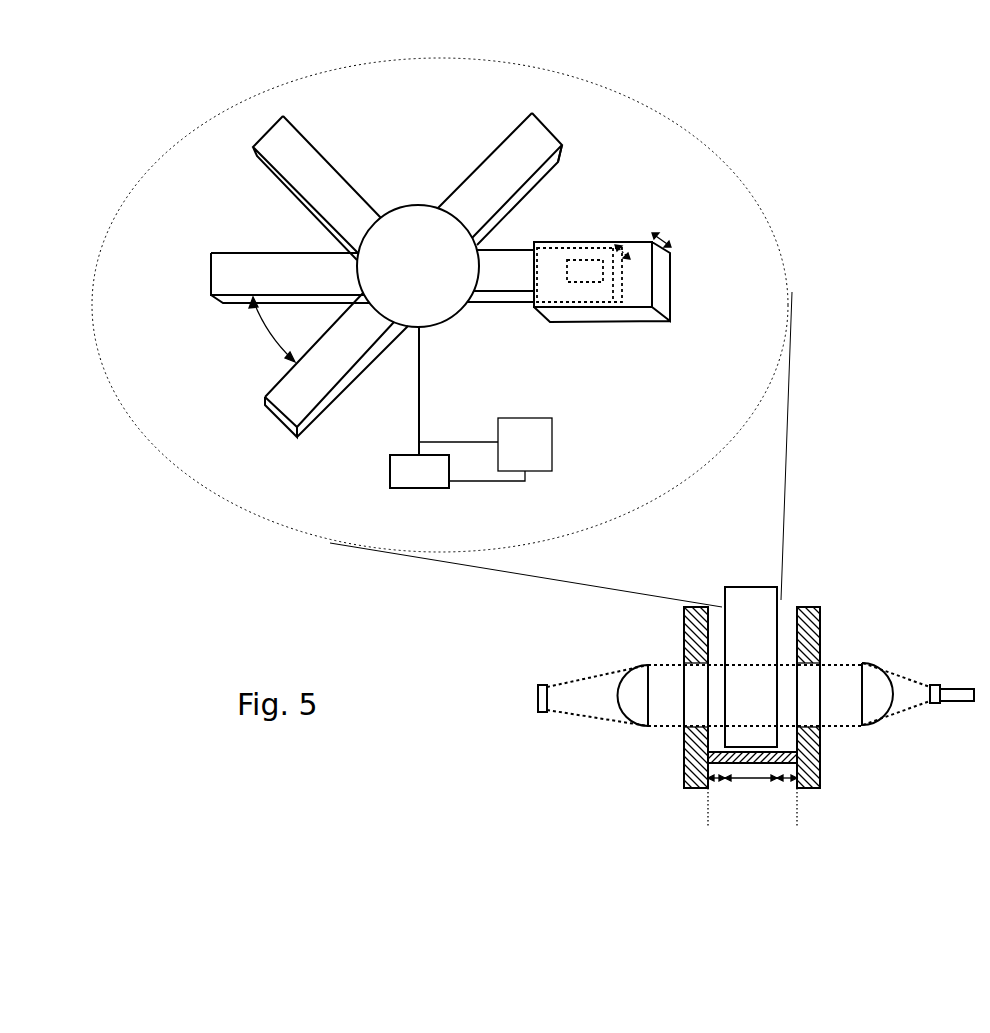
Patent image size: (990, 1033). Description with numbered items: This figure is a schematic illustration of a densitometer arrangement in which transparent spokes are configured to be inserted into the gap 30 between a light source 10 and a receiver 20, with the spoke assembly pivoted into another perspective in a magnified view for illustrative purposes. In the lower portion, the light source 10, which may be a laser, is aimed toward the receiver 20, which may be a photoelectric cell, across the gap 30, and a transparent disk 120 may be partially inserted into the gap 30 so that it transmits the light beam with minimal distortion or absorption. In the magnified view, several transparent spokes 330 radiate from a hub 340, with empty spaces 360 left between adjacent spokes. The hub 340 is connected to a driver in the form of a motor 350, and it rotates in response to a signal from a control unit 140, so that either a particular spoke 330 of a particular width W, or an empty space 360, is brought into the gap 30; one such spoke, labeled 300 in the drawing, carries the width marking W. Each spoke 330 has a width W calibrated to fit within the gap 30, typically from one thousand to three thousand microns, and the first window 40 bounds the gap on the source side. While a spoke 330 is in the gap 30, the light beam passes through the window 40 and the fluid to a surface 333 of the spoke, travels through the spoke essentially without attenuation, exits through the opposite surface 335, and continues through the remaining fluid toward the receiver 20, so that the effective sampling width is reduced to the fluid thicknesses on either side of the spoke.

The light source 10 is at (955, 702).
The receiver 20 is at (538, 698).
The gap 30 is at (637, 242).
The first window 40 is at (582, 260).
The transparent disk 120 is at (748, 587).
The control unit 140 is at (552, 443).
The arm 300 is at (556, 132).
The transparent spoke 330 is at (318, 392).
The surface of transparent spoke 333 is at (485, 165).
The surface of transparent spoke 335 is at (560, 161).
The hub 340 is at (398, 278).
The motor 350 is at (400, 485).
The empty space 360 is at (262, 340).